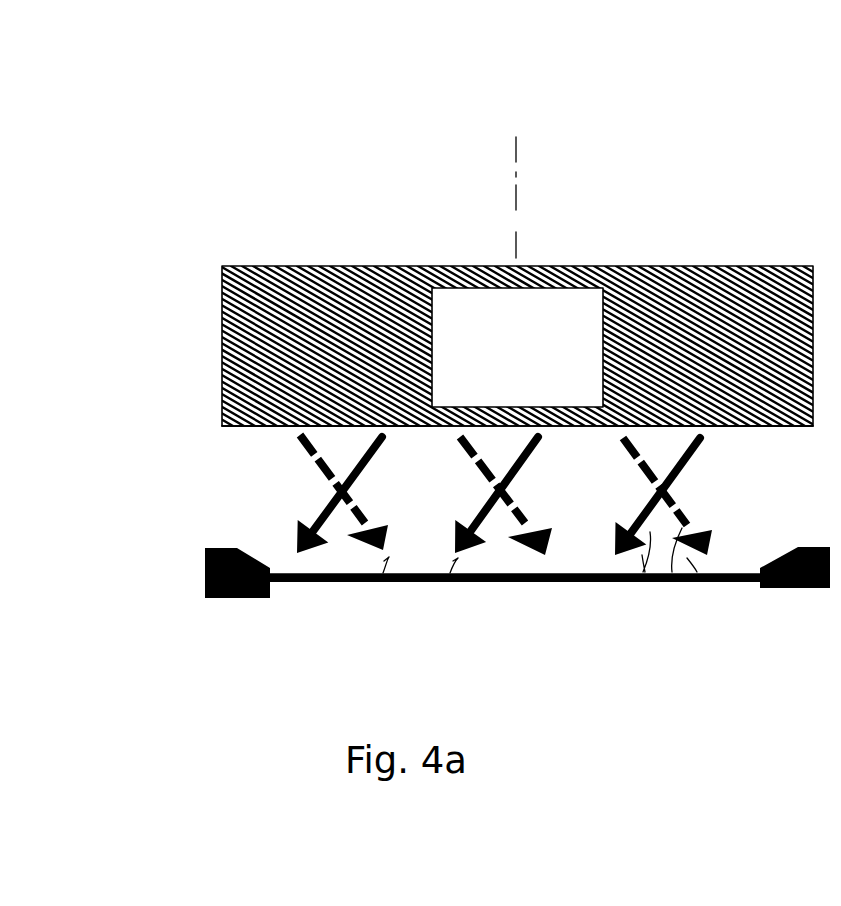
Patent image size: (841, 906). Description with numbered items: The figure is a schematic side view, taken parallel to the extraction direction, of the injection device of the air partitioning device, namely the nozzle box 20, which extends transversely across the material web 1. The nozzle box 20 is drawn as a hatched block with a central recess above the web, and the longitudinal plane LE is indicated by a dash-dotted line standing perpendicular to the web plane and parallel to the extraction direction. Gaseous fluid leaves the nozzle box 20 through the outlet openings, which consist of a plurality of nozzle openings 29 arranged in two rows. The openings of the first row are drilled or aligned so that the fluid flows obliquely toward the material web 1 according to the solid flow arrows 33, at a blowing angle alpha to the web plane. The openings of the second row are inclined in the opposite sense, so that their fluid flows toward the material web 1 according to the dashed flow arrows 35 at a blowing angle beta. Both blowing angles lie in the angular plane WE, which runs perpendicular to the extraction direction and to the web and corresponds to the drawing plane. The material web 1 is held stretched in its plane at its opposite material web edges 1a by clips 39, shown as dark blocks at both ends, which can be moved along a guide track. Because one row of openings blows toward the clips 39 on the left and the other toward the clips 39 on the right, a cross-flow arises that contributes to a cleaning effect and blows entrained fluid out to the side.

The nozzle box 20 is at (642, 236).
The longitudinal plane LE is at (527, 151).
The nozzle openings 29 is at (271, 438).
The flow arrows 33 is at (370, 453).
The dashed flow arrows 35 is at (297, 473).
The material web 1 is at (497, 582).
The material web edges 1a is at (275, 585).
The clips 39 is at (230, 600).
The angular plane WE is at (132, 567).